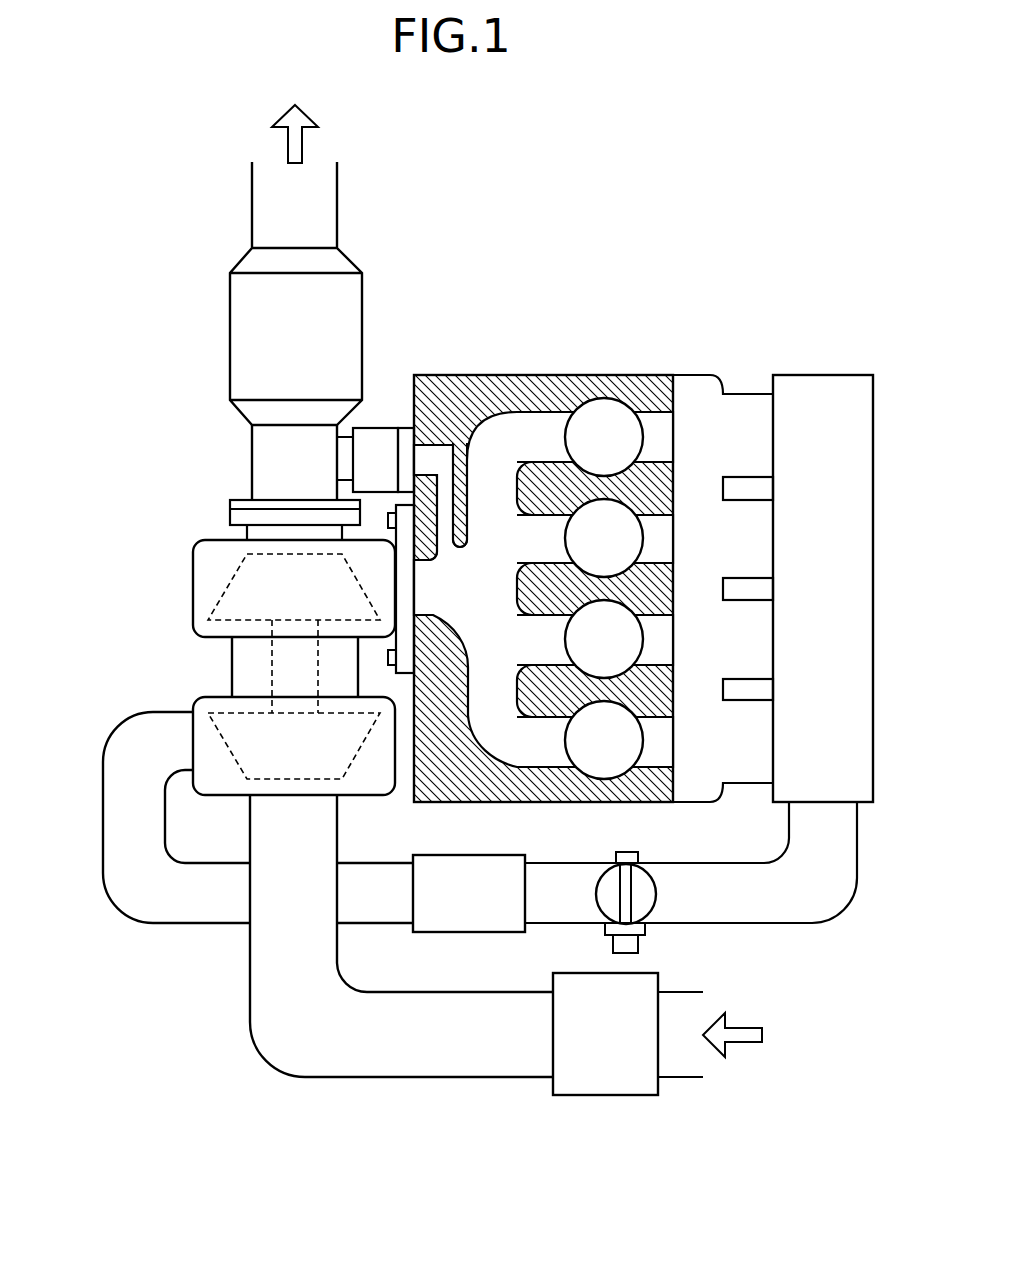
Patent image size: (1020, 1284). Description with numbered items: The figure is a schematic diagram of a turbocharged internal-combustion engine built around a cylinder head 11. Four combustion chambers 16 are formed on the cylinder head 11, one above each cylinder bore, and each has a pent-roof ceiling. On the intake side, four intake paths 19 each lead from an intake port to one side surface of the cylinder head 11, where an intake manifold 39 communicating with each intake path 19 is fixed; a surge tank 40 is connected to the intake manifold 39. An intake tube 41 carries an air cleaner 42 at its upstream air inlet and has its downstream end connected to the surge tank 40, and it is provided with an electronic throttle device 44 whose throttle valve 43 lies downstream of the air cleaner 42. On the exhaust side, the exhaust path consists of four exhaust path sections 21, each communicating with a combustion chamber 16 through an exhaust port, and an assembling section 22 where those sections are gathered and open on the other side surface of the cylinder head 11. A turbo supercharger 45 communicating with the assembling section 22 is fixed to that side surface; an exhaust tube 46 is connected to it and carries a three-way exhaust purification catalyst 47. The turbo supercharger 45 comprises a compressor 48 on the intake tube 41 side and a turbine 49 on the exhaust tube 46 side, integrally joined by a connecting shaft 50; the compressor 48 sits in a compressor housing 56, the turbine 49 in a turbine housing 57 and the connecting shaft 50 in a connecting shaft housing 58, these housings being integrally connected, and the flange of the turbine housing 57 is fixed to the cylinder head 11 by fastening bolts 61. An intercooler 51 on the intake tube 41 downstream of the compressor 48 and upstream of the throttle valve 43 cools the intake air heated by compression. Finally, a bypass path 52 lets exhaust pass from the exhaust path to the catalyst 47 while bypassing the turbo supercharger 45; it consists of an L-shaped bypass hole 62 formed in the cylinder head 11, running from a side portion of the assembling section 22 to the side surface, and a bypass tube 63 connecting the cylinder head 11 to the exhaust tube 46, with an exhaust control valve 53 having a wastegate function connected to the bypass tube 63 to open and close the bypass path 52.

The cylinder head 11 is at (540, 567).
The combustion chamber 16 is at (592, 512).
The intake path 19 is at (665, 541).
The exhaust path section 21 is at (556, 540).
The assembling section 22 is at (430, 590).
The intake manifold 39 is at (700, 545).
The surge tank 40 is at (836, 388).
The intake tube 41 is at (297, 1072).
The air cleaner 42 is at (607, 1095).
The throttle valve 43 is at (608, 900).
The electronic throttle device 44 is at (640, 943).
The turbo supercharger 45 is at (225, 644).
The exhaust tube 46 is at (258, 473).
The exhaust purification catalyst 47 is at (245, 323).
The compressor 48 is at (250, 770).
The turbine 49 is at (247, 577).
The connecting shaft 50 is at (280, 680).
The intercooler 51 is at (470, 930).
The bypass path 52 is at (433, 437).
The exhaust control valve 53 is at (384, 418).
The compressor housing 56 is at (372, 787).
The turbine housing 57 is at (212, 547).
The connecting shaft housing 58 is at (227, 692).
The fastening bolt 61 is at (377, 510).
The bypass hole 62 is at (444, 457).
The bypass tube 63 is at (347, 448).